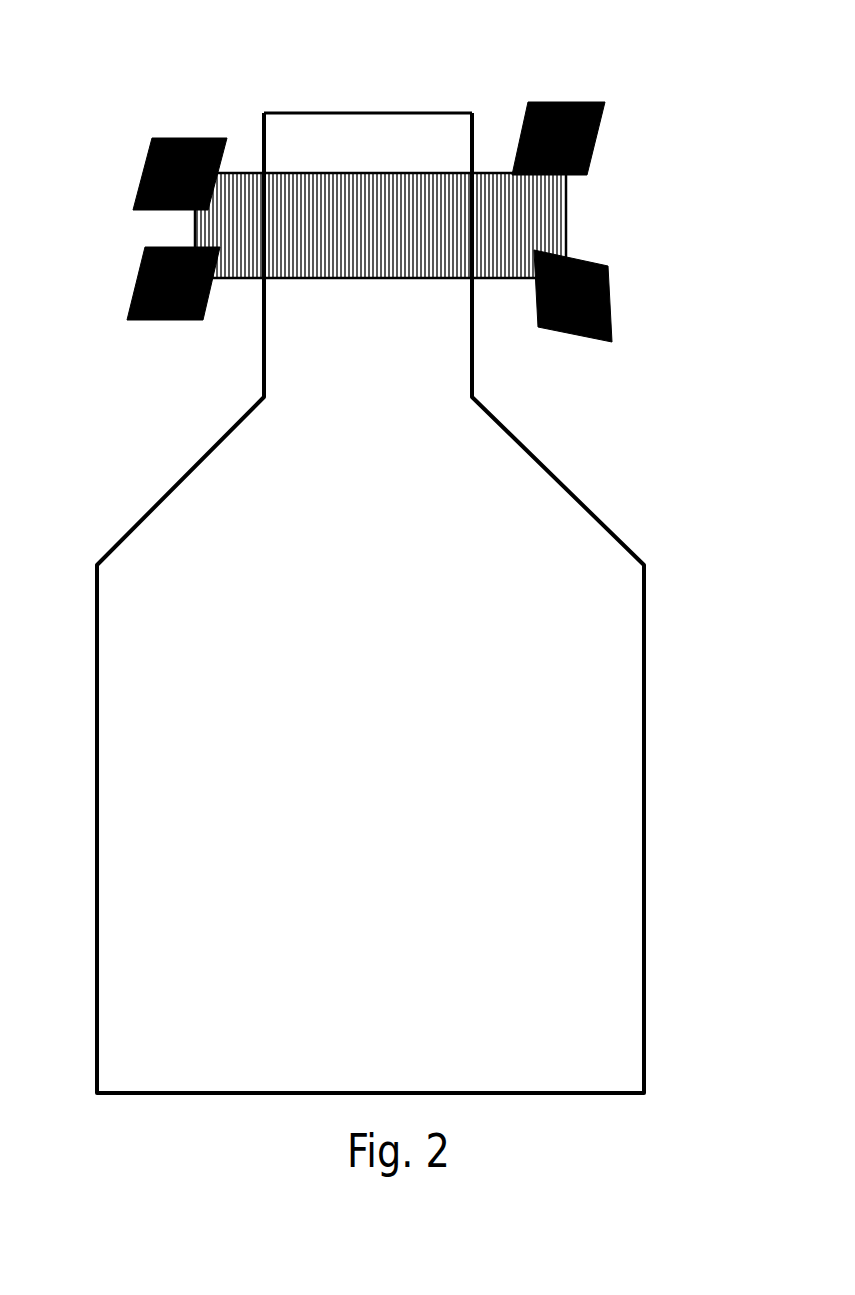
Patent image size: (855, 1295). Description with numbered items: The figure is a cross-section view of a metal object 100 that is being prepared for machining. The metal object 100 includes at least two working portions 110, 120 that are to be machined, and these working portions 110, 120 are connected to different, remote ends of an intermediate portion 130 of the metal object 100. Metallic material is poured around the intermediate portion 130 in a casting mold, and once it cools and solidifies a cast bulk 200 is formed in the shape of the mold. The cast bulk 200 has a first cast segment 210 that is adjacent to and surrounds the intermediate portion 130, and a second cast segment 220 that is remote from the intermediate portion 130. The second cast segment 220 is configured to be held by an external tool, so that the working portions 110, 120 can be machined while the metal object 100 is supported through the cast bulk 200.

The metal object 100 is at (374, 150).
The working portion 110 is at (148, 212).
The working portion 120 is at (610, 298).
The intermediate portion 130 is at (380, 243).
The cast bulk 200 is at (142, 506).
The first cast segment 210 is at (362, 138).
The second cast segment 220 is at (620, 1020).